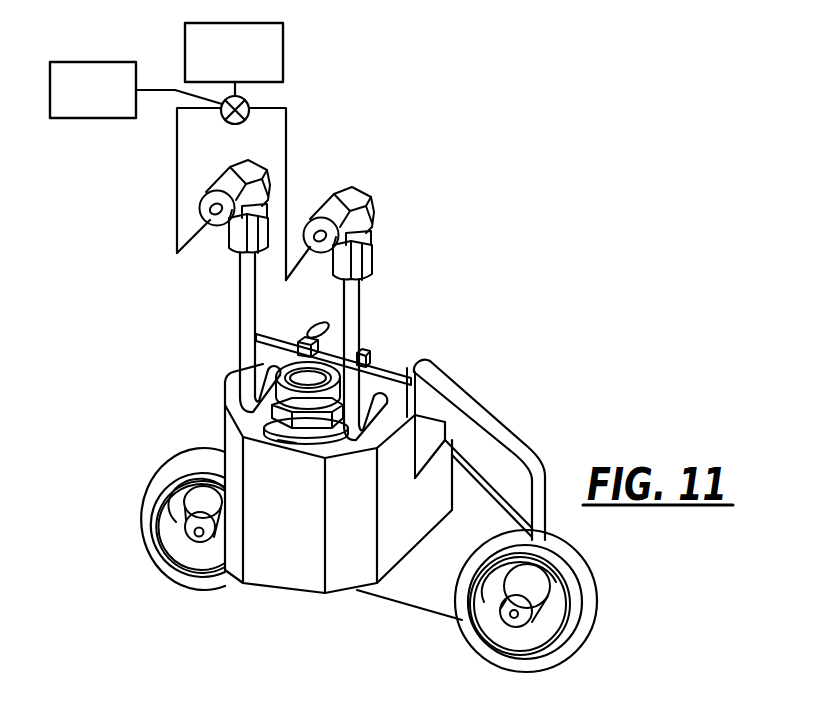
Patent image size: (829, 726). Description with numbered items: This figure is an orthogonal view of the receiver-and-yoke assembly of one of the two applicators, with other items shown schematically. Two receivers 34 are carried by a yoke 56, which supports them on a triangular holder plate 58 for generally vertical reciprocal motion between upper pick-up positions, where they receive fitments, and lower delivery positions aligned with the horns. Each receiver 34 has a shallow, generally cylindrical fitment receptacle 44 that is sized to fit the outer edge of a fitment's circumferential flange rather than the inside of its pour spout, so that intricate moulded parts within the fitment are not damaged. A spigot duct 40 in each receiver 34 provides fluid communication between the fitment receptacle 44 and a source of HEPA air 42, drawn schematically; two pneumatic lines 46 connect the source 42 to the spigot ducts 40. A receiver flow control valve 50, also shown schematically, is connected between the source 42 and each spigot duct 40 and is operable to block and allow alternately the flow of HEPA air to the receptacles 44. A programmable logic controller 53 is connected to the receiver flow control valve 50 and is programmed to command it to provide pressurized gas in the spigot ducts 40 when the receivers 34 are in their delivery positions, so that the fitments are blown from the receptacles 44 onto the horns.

The receiver 34 is at (175, 468).
The spigot duct 40 is at (202, 537).
The source of HEPA air 42 is at (267, 52).
The fitment receptacle 44 is at (180, 502).
The pneumatic line 46 is at (310, 336).
The receiver flow control valve 50 is at (249, 103).
The programmable logic controller 53 is at (84, 78).
The yoke 56 is at (298, 577).
The triangular holder plate 58 is at (467, 510).